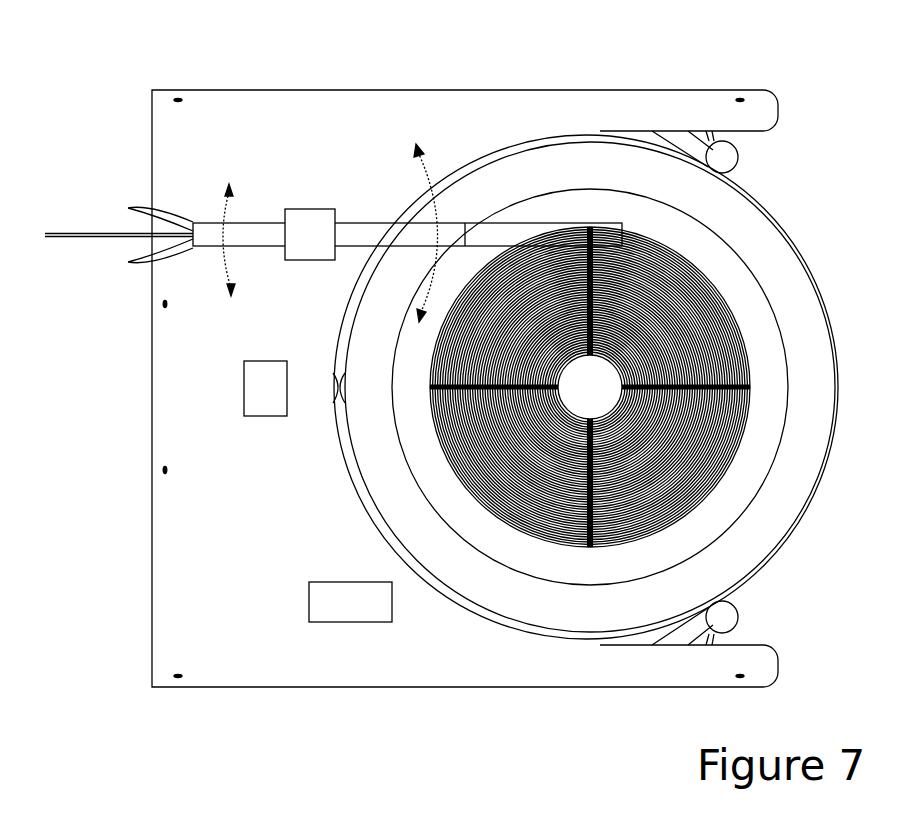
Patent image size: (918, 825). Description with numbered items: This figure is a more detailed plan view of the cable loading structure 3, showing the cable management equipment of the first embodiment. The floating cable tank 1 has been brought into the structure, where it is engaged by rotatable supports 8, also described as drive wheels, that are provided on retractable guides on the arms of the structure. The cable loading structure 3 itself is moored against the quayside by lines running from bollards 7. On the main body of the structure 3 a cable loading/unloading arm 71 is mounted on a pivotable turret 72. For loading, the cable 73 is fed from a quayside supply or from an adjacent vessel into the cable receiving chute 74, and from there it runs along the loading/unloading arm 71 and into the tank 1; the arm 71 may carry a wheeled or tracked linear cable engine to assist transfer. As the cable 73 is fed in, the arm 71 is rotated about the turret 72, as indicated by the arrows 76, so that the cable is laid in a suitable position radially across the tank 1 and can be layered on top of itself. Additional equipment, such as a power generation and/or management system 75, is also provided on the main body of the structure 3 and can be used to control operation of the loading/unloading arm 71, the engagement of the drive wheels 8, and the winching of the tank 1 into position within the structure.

The floating cable tank 1 is at (787, 233).
The cable loading structure 3 is at (486, 712).
The bollards 7 is at (165, 470).
The rotatable support 8 is at (733, 168).
The cable loading/unloading arm 71 is at (422, 235).
The pivotable turret 72 is at (311, 208).
The cable 73 is at (72, 237).
The cable receiving chute 74 is at (165, 255).
The power generation and/or management system 75 is at (345, 622).
The arrows 76 is at (223, 205).